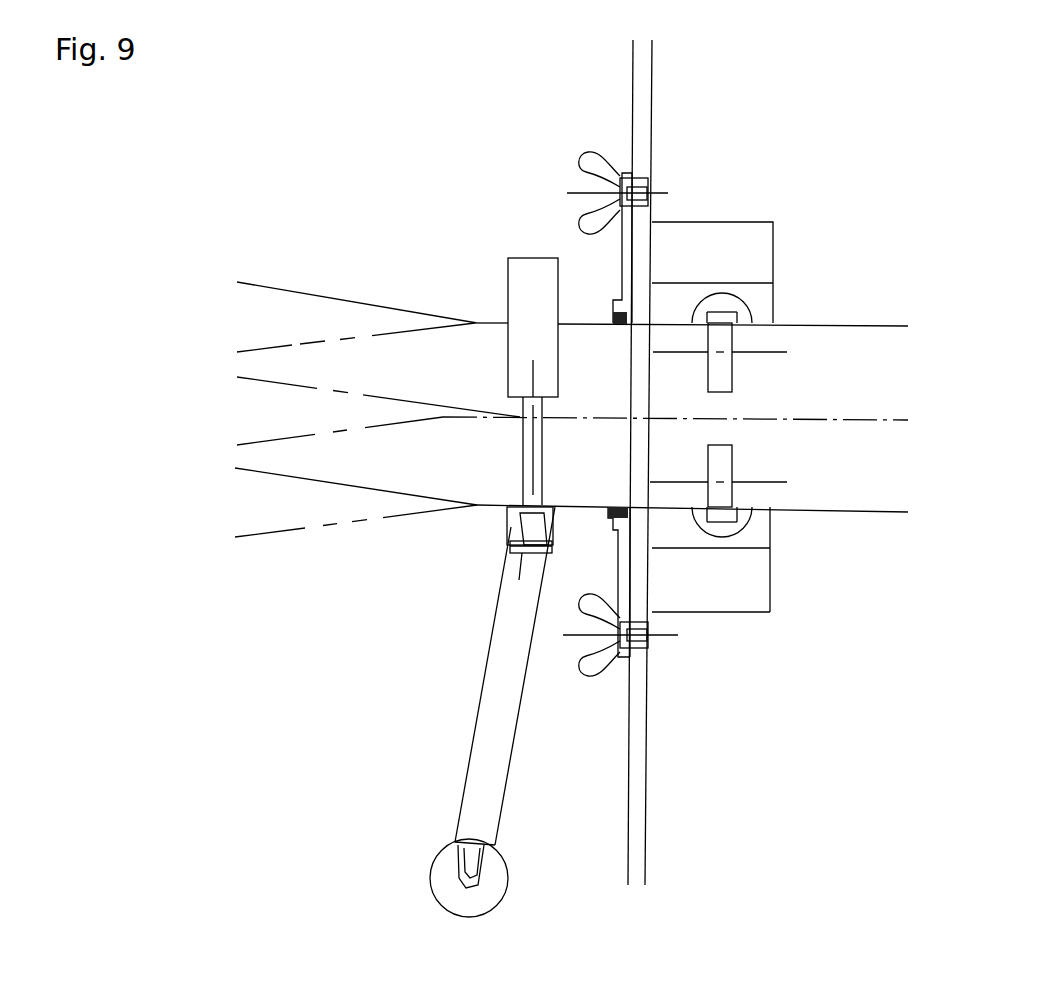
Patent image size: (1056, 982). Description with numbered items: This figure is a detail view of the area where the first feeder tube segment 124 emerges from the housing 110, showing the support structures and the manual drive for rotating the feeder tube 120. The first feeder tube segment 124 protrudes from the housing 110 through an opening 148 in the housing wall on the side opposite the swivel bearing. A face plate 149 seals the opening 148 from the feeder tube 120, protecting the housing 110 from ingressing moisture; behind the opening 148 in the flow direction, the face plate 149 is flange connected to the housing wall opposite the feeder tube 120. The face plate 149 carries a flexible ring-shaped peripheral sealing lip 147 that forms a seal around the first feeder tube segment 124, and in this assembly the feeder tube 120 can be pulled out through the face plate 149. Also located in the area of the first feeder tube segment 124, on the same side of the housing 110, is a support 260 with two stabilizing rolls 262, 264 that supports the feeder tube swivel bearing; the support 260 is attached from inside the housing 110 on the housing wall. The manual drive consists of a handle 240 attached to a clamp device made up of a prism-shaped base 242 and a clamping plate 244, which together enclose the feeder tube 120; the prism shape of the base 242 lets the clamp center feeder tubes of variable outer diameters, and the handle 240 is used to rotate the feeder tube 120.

The housing 110 is at (645, 850).
The feeder tube 120 is at (908, 551).
The first feeder tube segment 124 is at (573, 510).
The sealing lip 147 is at (568, 488).
The opening 148 is at (653, 507).
The face plate 149 is at (617, 260).
The handle 240 is at (456, 712).
The base 242 is at (530, 283).
The clamping plate 244 is at (510, 540).
The support 260 is at (773, 237).
The stabilizing roll 262 is at (722, 369).
The stabilizing roll 264 is at (718, 463).